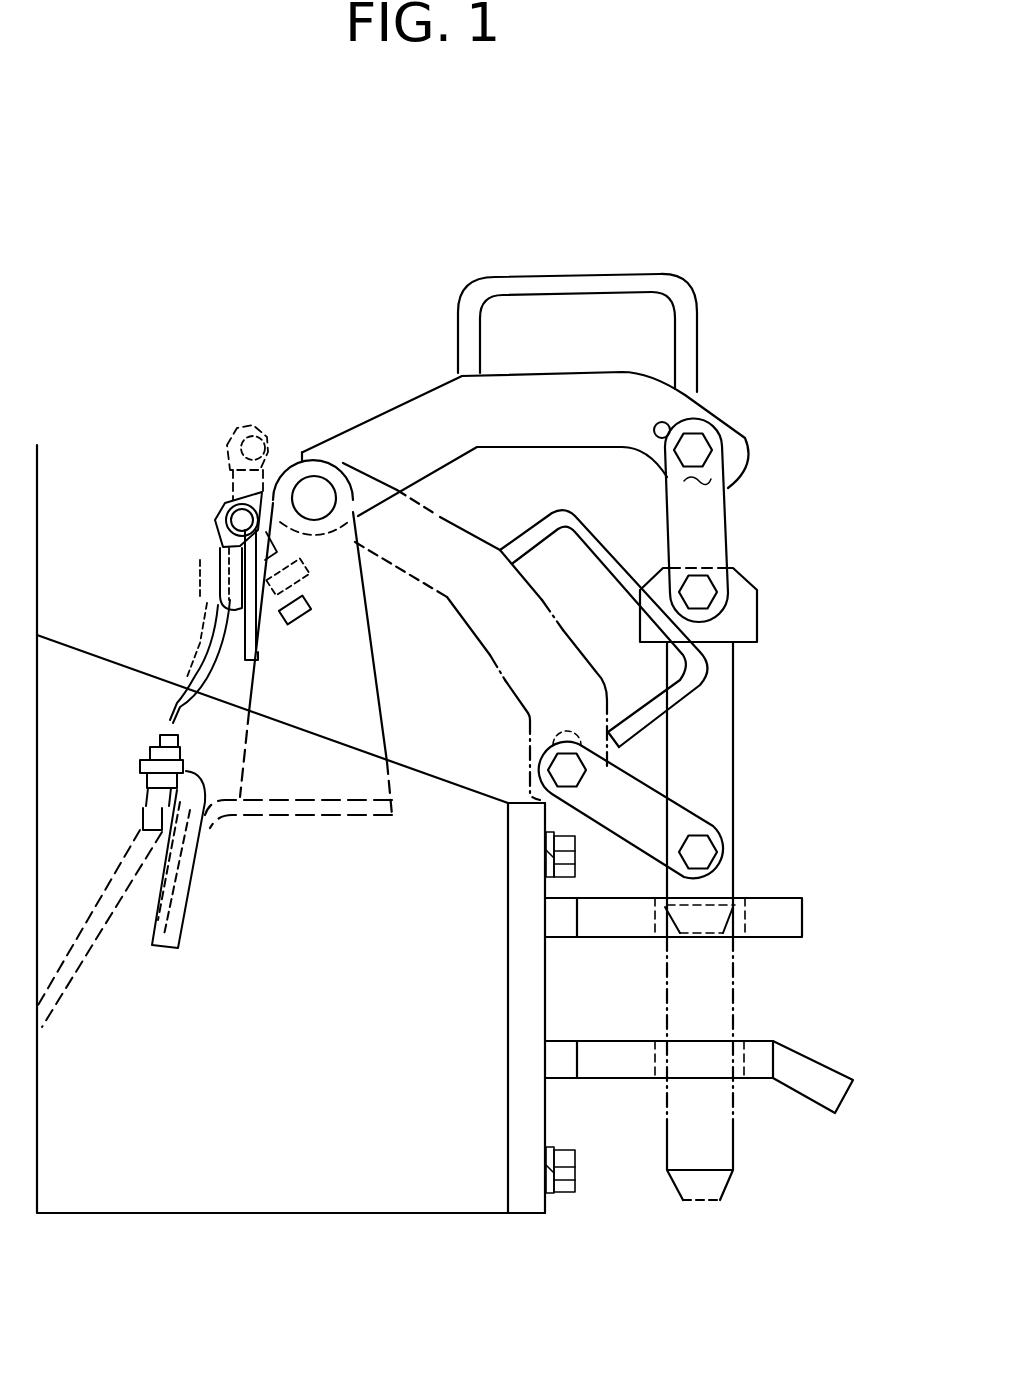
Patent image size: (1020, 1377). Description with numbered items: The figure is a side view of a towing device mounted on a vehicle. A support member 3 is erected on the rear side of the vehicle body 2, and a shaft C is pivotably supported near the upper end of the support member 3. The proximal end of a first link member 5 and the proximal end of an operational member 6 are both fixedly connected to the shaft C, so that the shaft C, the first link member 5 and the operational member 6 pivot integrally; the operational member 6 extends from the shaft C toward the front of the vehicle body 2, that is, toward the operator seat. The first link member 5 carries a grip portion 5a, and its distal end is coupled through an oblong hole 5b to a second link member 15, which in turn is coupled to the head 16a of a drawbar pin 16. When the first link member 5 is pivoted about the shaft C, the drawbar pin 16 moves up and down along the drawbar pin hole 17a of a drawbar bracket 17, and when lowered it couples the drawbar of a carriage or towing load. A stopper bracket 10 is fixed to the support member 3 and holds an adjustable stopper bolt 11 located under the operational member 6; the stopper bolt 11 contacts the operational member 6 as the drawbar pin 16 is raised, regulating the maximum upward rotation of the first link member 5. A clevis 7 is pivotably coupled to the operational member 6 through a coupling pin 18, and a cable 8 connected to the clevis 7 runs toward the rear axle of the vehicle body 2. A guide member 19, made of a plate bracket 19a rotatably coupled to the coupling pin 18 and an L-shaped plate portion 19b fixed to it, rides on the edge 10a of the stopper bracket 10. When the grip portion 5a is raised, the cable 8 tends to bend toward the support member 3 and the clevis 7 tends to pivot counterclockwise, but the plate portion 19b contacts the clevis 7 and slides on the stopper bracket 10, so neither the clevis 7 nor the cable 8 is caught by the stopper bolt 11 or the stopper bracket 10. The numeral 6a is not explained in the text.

The vehicle body 2 is at (428, 1185).
The support member 3 is at (347, 698).
The first link member 5 is at (420, 410).
The grip portion 5a is at (598, 290).
The oblong hole 5b is at (663, 425).
The operational member 6 is at (247, 492).
The pivot boss 6a is at (348, 517).
The clevis 7 is at (207, 553).
The cable 8 is at (207, 668).
The stopper bracket 10 is at (307, 577).
The edge 10a is at (230, 577).
The stopper bolt 11 is at (313, 607).
The second link member 15 is at (707, 520).
The drawbar pin 16 is at (720, 733).
The head 16a is at (737, 615).
The drawbar bracket 17 is at (748, 917).
The drawbar pin hole 17a is at (753, 937).
The coupling pin 18 is at (235, 520).
The guide member 19 is at (217, 588).
The plate bracket 19a is at (213, 600).
The plate portion 19b is at (247, 637).
The shaft C is at (316, 492).